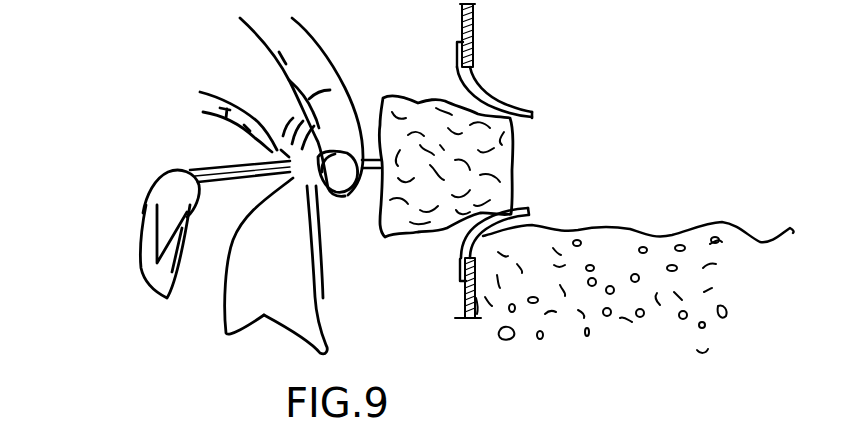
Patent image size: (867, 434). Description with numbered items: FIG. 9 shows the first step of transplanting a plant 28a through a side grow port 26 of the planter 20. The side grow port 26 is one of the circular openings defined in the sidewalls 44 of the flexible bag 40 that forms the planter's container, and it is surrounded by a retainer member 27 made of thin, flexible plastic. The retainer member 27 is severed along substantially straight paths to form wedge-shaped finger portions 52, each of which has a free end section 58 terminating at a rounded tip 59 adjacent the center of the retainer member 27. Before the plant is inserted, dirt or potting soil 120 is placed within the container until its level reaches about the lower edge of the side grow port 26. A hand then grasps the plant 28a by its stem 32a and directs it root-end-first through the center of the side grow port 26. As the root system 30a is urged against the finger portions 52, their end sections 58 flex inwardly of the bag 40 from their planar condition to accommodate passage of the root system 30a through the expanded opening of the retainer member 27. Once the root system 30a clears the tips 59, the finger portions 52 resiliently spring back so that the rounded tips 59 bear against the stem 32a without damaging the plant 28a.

The planter 20 is at (113, 292).
The side grow port 26 is at (460, 281).
The retainer member 27 is at (458, 83).
The plant 28a is at (147, 228).
The root system 30a is at (515, 157).
The stem 32a is at (240, 167).
The bag 40 is at (464, 317).
The sidewalls 44 is at (461, 18).
The finger portion 52 is at (478, 83).
The end section 58 is at (507, 108).
The tip 59 is at (533, 117).
The dirt or potting soil 120 is at (664, 246).